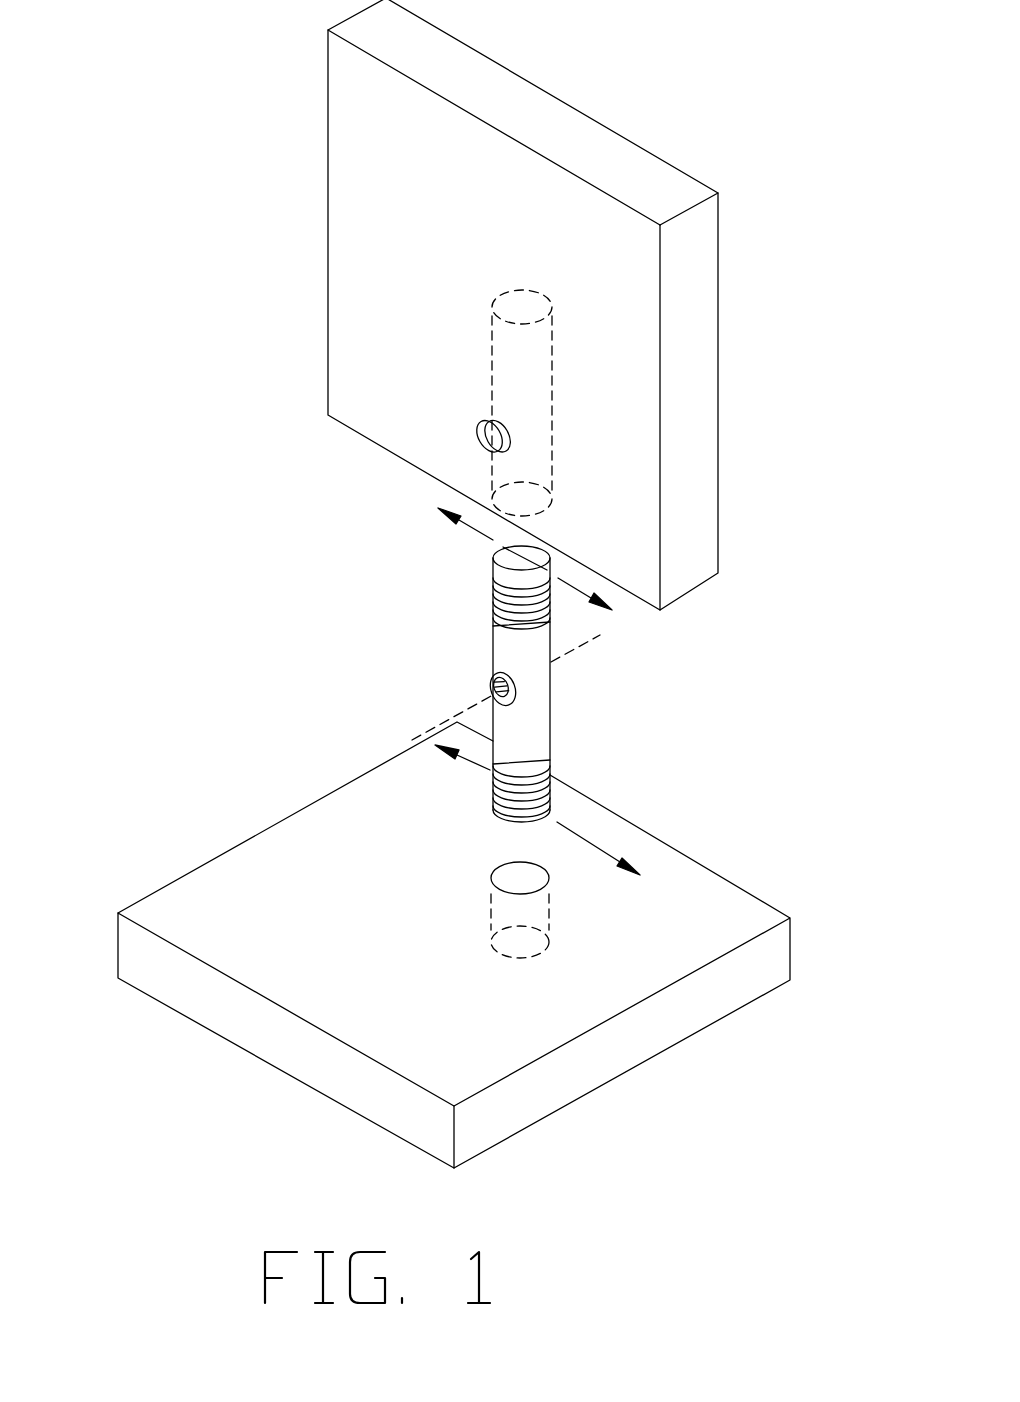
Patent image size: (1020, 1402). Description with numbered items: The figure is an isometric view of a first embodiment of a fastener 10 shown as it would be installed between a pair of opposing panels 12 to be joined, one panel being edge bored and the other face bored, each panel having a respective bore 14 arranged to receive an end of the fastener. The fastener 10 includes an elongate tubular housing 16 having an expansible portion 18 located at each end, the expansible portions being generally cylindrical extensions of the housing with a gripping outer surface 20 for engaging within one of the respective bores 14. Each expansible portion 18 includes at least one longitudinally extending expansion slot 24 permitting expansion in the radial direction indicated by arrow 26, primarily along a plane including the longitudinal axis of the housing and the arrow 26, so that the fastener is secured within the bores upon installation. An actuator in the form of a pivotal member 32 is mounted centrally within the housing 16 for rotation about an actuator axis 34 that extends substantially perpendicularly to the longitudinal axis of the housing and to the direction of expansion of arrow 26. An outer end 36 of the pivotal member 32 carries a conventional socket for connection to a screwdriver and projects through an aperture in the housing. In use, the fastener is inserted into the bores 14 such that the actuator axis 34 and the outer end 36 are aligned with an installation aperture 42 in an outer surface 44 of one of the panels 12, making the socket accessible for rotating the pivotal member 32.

The fastener 10 is at (232, 594).
The panel 12 is at (494, 584).
The bore 14 is at (506, 624).
The elongate tubular housing 16 is at (549, 664).
The expansible portion 18 is at (570, 649).
The gripping outer surface 20 is at (464, 585).
The expansion slot 24 is at (435, 721).
The arrow 26 is at (527, 672).
The pivotal member 32 is at (540, 684).
The actuator axis 34 is at (595, 653).
The outer end 36 is at (445, 686).
The installation aperture 42 is at (404, 453).
The outer surface 44 is at (353, 301).